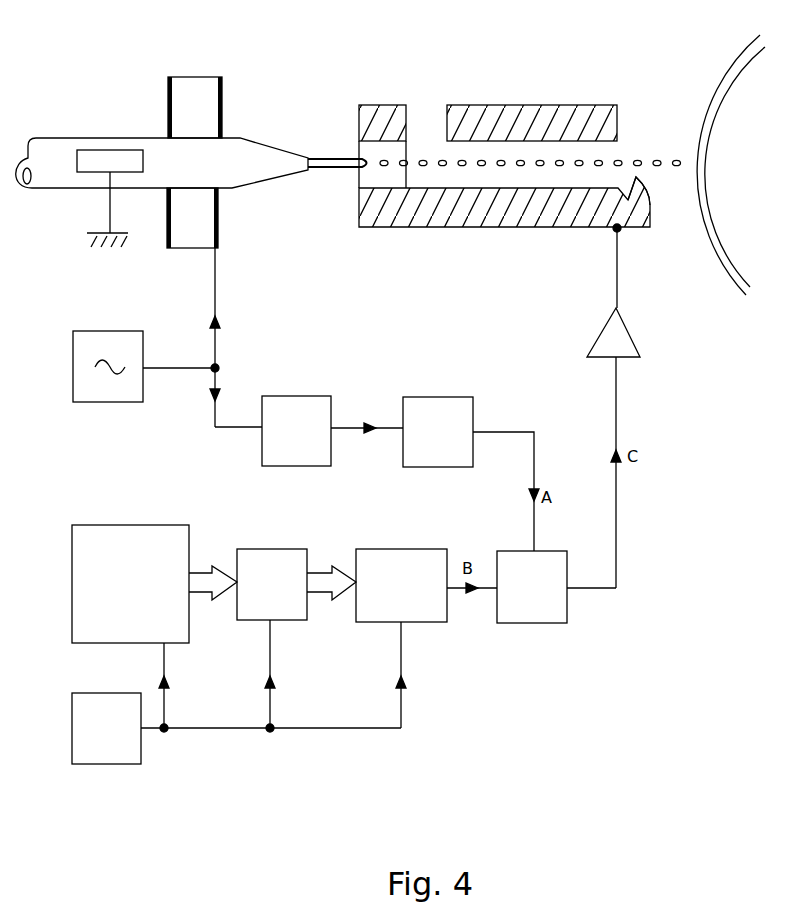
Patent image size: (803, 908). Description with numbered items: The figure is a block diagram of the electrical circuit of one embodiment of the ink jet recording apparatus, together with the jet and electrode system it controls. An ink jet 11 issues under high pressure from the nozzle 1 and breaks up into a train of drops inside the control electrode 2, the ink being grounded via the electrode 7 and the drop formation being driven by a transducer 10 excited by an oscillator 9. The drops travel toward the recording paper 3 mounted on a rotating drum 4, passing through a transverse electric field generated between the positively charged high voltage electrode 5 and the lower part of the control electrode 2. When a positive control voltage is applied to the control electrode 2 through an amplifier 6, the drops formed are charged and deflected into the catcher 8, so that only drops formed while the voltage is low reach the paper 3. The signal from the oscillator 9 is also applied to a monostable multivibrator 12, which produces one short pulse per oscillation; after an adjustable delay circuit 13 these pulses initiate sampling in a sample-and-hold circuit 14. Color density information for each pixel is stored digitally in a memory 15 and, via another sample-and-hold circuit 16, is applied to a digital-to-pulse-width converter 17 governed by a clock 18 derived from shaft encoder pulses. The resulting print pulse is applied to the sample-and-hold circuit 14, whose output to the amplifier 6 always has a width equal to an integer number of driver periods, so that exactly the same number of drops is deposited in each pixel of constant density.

The nozzle 1 is at (295, 162).
The control electrode 2 is at (394, 112).
The recording medium or paper 3 is at (741, 57).
The rotating drum 4 is at (727, 100).
The high voltage electrode 5 is at (528, 115).
The amplifier 6 is at (617, 340).
The electrode 7 is at (97, 160).
The catcher 8 is at (640, 178).
The oscillator 9 is at (95, 393).
The transducer 10 is at (190, 87).
The ink jet 11 is at (340, 169).
The monostable multivibrator 12 is at (298, 405).
The adjustable delay circuit 13 is at (443, 405).
The sample-and-hold circuit 14 is at (540, 612).
The memory 15 is at (108, 635).
The sample-and-hold circuit 16 is at (287, 612).
The digital-to-pulse-width converter 17 is at (420, 612).
The clock 18 is at (108, 760).